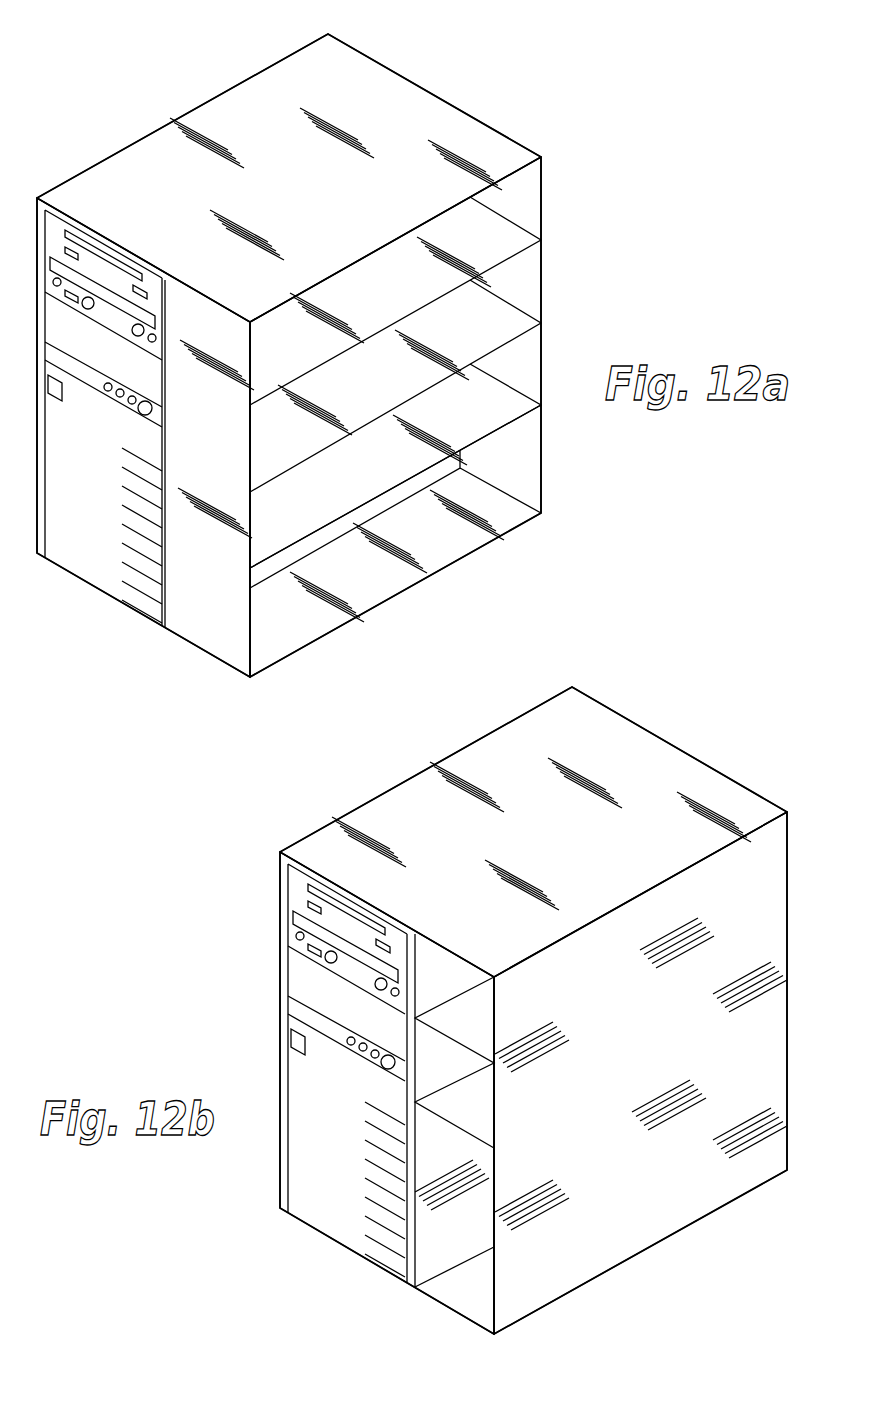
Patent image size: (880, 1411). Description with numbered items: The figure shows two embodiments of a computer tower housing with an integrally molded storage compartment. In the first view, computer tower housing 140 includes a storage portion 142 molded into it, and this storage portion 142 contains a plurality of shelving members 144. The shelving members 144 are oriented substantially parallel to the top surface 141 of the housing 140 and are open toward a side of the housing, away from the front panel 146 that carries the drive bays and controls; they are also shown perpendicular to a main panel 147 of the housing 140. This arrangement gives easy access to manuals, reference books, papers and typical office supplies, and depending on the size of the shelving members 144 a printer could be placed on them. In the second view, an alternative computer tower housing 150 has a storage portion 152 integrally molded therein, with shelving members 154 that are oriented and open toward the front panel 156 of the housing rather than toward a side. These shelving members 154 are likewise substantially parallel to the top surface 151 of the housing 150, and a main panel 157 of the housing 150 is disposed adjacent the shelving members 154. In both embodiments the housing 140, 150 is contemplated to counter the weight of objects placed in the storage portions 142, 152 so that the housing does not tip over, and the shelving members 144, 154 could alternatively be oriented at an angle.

In FIG. 12A, the computer tower housing 140 is at (480, 103).
In FIG. 12A, the top surface 141 is at (317, 72).
In FIG. 12A, the storage portion 142 is at (545, 228).
In FIG. 12A, the shelving members 144 is at (490, 327).
In FIG. 12A, the front panel 146 is at (190, 620).
In FIG. 12A, the main panel 147 is at (397, 493).
In FIG. 12B, the computer tower housing 150 is at (633, 708).
In FIG. 12B, the top surface 151 is at (683, 785).
In FIG. 12B, the storage portion 152 is at (493, 1267).
In FIG. 12B, the shelving members 154 is at (472, 1133).
In FIG. 12B, the front panel 156 is at (338, 1212).
In FIG. 12B, the main panel 157 is at (430, 1256).